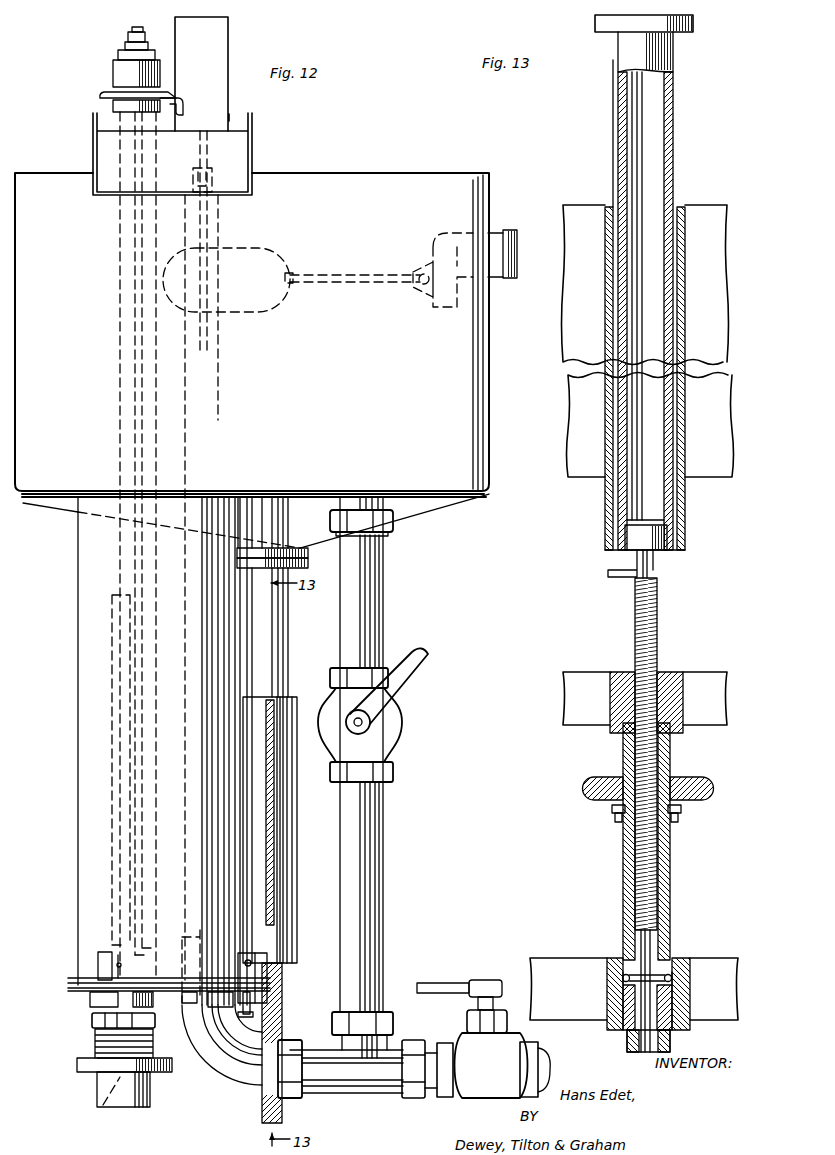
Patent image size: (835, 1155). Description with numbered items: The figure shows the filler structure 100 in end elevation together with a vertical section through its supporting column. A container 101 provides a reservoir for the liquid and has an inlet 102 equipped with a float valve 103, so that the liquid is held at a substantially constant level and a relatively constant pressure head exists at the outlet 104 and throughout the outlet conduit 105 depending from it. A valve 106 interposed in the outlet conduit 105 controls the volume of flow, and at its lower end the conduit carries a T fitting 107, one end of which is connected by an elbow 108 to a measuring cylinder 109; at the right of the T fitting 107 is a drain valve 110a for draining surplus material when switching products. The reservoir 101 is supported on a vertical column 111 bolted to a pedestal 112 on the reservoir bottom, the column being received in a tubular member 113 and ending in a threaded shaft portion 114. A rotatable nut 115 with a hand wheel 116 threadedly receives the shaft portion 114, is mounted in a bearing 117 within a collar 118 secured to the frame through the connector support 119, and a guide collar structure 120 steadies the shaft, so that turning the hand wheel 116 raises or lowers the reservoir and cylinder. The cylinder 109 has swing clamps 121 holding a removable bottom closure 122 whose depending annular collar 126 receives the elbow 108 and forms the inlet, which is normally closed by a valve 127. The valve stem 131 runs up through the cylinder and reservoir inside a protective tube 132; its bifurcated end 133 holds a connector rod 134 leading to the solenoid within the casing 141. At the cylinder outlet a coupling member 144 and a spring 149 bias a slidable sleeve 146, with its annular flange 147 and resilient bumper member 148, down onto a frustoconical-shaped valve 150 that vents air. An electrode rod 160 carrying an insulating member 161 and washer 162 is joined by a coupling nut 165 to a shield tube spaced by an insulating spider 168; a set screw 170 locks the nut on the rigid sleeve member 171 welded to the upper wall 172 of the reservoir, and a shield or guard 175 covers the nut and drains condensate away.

In FIG. 12, the filler structure 100 is at (334, 170).
In FIG. 12, the container 101 is at (419, 172).
In FIG. 12, the inlet 102 is at (494, 231).
In FIG. 12, the float valve 103 is at (283, 250).
In FIG. 12, the outlet 104 is at (392, 533).
In FIG. 12, the outlet conduit 105 is at (384, 921).
In FIG. 12, the valve 106 is at (394, 737).
In FIG. 12, the T fitting 107 is at (361, 1083).
In FIG. 12, the elbow 108 is at (230, 1082).
In FIG. 12, the measuring cylinder 109 is at (80, 888).
In FIG. 12, the drain valve 110a is at (461, 1043).
In FIG. 12, the vertical column 111 is at (281, 626).
In FIG. 13, the vertical column 111 is at (674, 151).
In FIG. 12, the pedestal 112 is at (284, 532).
In FIG. 12, the tubular member 113 is at (287, 927).
In FIG. 13, the tubular member 113 is at (686, 495).
In FIG. 12, the shaft portion 114 is at (263, 1109).
In FIG. 13, the shaft portion 114 is at (658, 604).
In FIG. 13, the rotatable nut 115 is at (671, 856).
In FIG. 13, the hand wheel 116 is at (713, 788).
In FIG. 13, the bearing 117 is at (690, 977).
In FIG. 13, the collar 118 is at (690, 1000).
In FIG. 13, the connector support 119 is at (627, 1042).
In FIG. 13, the guide collar structure 120 is at (674, 672).
In FIG. 12, the swing clamps 121 is at (98, 963).
In FIG. 12, the bottom closure 122 is at (66, 986).
In FIG. 12, the depending annular collar 126 is at (187, 1030).
In FIG. 12, the valve 127 is at (190, 937).
In FIG. 12, the valve stem 131 is at (208, 358).
In FIG. 12, the tube 132 is at (214, 420).
In FIG. 12, the bifurcated end 133 is at (207, 175).
In FIG. 12, the connector rod 134 is at (208, 150).
In FIG. 12, the casing 141 is at (230, 92).
In FIG. 12, the coupling member 144 is at (92, 1023).
In FIG. 12, the slidable sleeve 146 is at (97, 1092).
In FIG. 12, the annular flange 147 is at (77, 1063).
In FIG. 12, the resilient bumper member 148 is at (77, 1071).
In FIG. 12, the spring 149 is at (95, 1040).
In FIG. 12, the frustoconical-shaped valve 150 is at (103, 1108).
In FIG. 12, the elongated rod 160 is at (137, 568).
In FIG. 12, the insulating member 161 is at (118, 57).
In FIG. 12, the washer 162 is at (123, 44).
In FIG. 12, the coupling nut 165 is at (113, 78).
In FIG. 12, the insulating spider 168 is at (124, 712).
In FIG. 12, the set screw 170 is at (179, 108).
In FIG. 12, the rigid sleeve member 171 is at (118, 323).
In FIG. 12, the upper wall 172 is at (105, 142).
In FIG. 12, the shield or guard 175 is at (100, 97).